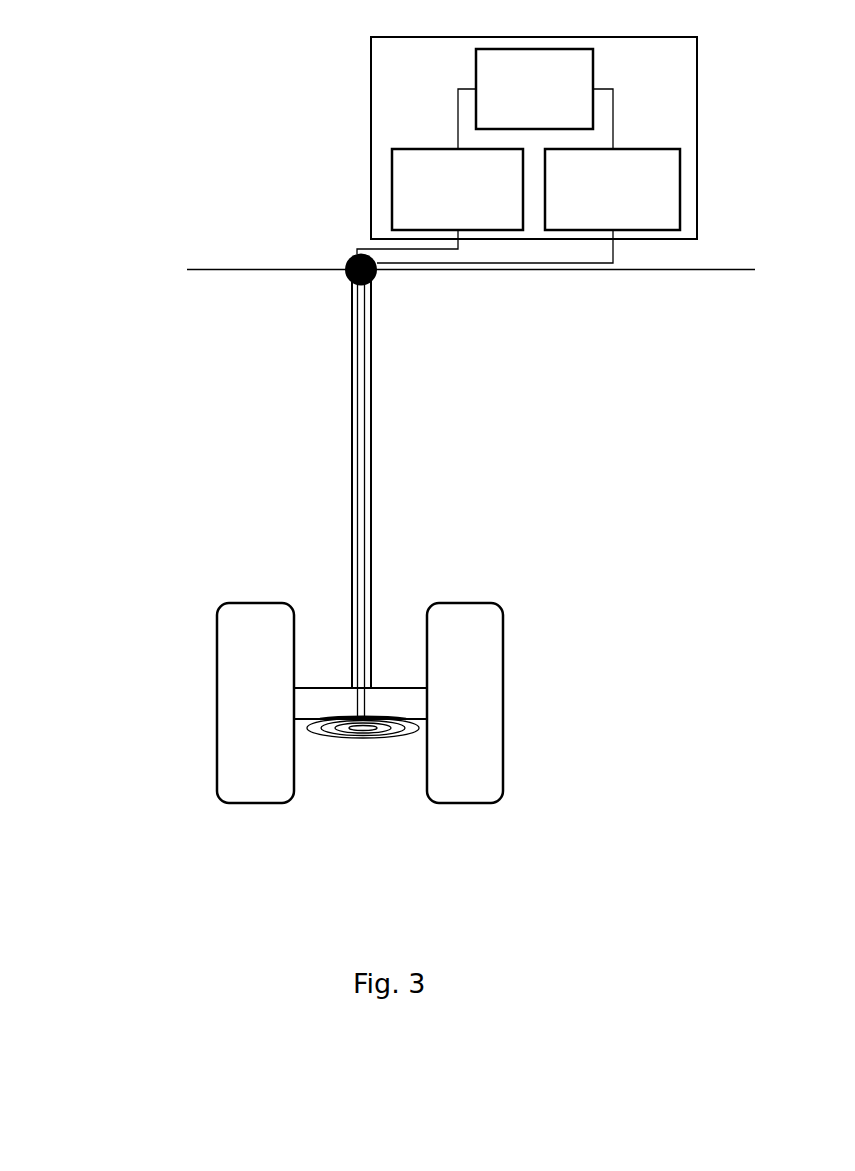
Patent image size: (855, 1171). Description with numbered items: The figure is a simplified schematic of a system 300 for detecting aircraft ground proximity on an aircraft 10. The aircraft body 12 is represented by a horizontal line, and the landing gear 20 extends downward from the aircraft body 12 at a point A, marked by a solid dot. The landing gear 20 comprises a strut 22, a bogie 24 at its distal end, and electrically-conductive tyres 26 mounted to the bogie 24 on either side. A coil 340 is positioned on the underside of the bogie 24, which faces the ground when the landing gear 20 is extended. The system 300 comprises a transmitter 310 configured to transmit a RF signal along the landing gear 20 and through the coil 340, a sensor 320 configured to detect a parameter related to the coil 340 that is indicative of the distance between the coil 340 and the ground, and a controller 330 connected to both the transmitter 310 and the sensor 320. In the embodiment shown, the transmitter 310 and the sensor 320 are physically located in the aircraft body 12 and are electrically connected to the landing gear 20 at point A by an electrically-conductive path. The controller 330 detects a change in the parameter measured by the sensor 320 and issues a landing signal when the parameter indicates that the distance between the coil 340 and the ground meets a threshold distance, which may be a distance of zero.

The aircraft 10 is at (160, 145).
The aircraft body 12 is at (198, 269).
The landing gear 20 is at (350, 582).
The strut 22 is at (372, 604).
The bogie 24 is at (313, 705).
The tyres 26 is at (230, 803).
The system 300 is at (353, 92).
The transmitter 310 is at (480, 209).
The sensor 320 is at (635, 209).
The controller 330 is at (557, 110).
The coil 340 is at (347, 740).
The point A is at (350, 255).